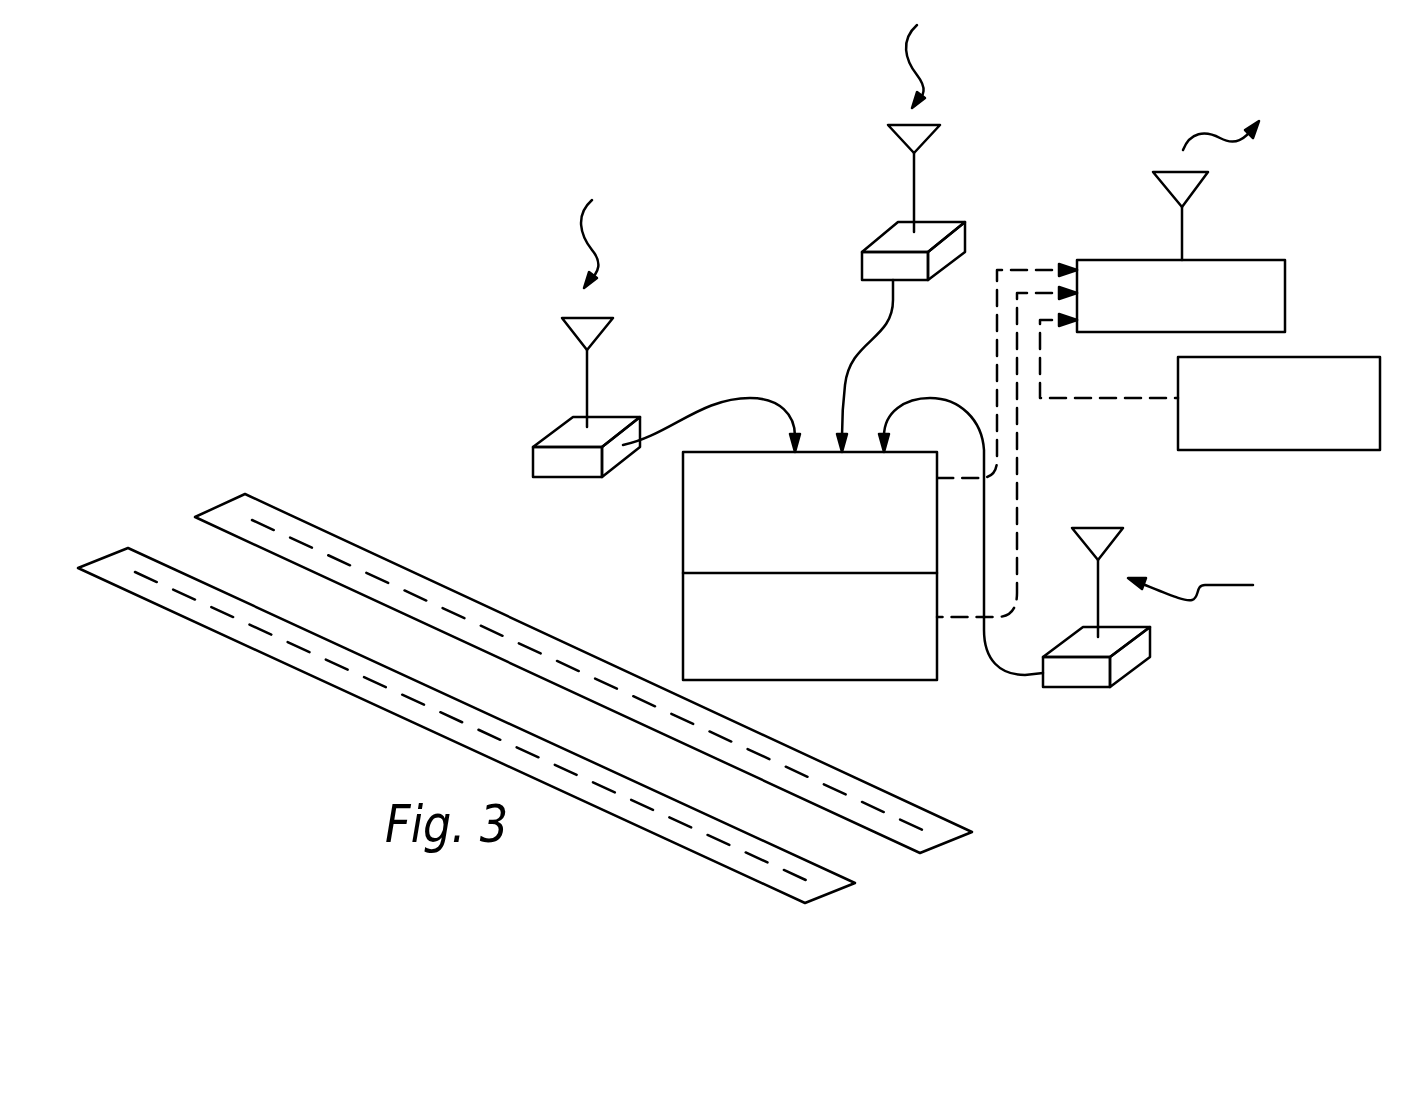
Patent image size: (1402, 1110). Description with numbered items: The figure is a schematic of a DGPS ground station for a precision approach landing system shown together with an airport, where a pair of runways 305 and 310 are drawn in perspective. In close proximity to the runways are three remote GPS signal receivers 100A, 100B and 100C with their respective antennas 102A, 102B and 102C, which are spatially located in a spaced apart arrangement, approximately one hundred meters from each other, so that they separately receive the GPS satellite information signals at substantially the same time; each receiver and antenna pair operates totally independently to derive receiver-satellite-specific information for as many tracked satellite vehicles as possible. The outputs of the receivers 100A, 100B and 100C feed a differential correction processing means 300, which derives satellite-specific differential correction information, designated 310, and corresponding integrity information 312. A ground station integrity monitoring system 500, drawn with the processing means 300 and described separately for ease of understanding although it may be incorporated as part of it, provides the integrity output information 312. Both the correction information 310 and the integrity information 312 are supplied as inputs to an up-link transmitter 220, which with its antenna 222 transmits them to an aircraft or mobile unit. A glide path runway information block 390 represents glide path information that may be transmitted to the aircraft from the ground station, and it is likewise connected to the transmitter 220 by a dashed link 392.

The runway 305 is at (107, 555).
The runway / satellite-specific differential correction information 310 is at (222, 505).
The integrity information 312 is at (1017, 480).
The glide path runway information line 392 is at (1073, 398).
The differential correction processing means 300 is at (683, 517).
The ground station integrity monitoring system 500 is at (942, 643).
The up-link transmitter 220 is at (1285, 293).
The antenna 222 is at (1200, 188).
The glide path information block 390 is at (1323, 452).
The remote GPS signal receiver 100A is at (542, 437).
The antenna 102A is at (610, 326).
The remote GPS signal receiver 100B is at (862, 262).
The antenna 102B is at (935, 136).
The remote GPS signal receiver 100C is at (1130, 655).
The antenna 102C is at (1117, 535).